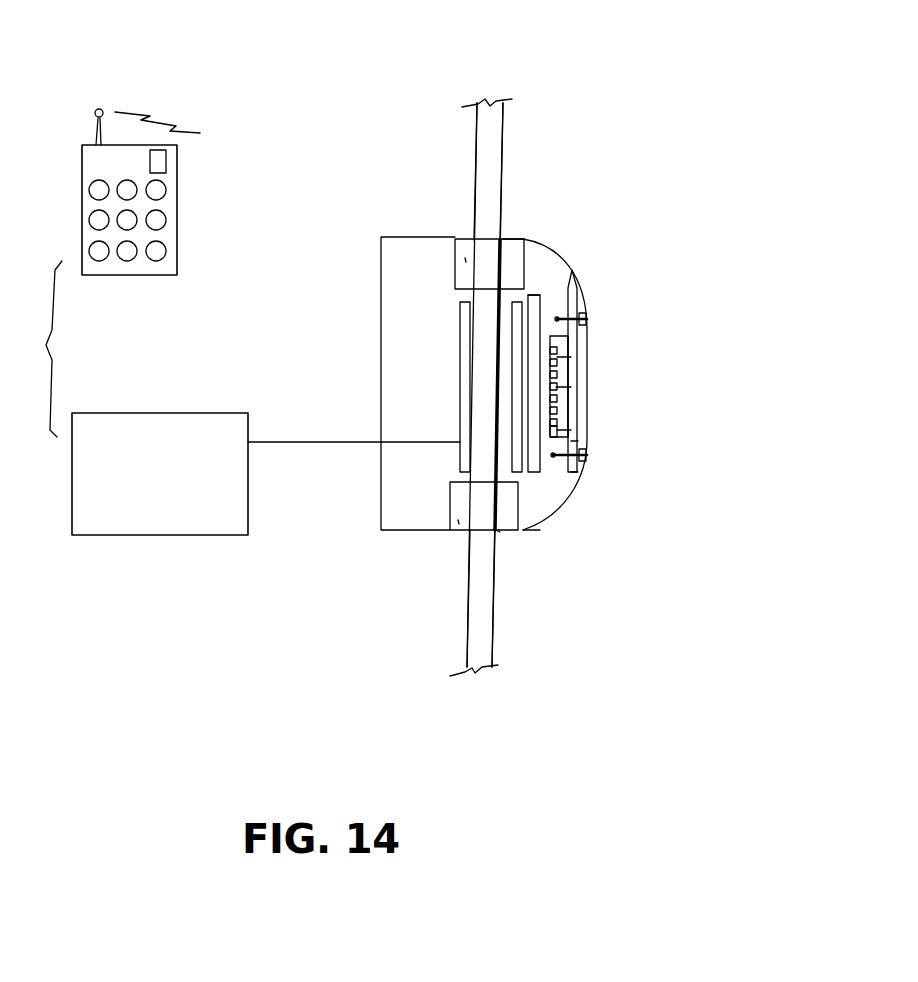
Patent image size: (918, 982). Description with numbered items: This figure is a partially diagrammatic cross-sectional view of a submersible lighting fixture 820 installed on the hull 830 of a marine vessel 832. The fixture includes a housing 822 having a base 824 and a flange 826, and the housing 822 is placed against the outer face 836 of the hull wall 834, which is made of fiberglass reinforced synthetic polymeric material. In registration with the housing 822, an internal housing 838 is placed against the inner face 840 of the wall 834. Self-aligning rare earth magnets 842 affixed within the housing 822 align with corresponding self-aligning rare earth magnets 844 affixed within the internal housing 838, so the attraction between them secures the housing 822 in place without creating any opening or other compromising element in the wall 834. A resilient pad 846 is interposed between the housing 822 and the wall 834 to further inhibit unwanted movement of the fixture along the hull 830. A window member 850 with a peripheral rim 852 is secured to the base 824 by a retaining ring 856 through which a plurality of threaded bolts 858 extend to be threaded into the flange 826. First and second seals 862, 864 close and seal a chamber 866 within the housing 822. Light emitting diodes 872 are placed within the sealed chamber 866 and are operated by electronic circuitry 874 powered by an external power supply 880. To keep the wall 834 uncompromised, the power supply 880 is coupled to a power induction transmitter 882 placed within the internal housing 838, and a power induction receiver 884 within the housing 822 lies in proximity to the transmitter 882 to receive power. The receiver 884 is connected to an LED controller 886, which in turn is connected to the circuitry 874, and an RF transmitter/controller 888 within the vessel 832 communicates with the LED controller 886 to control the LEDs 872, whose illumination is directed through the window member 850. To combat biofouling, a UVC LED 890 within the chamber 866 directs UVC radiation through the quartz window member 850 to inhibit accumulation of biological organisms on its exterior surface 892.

The submersible lighting fixture 820 is at (560, 522).
The housing 822 is at (530, 523).
The base 824 is at (515, 239).
The flange 826 is at (518, 313).
The hull 830 is at (503, 108).
The marine vessel 832 is at (508, 134).
The wall 834 is at (477, 131).
The outer face 836 is at (493, 627).
The internal housing 838 is at (383, 530).
The inner face 840 is at (467, 624).
The self-aligning rare earth magnets 842 is at (512, 260).
The self-aligning rare earth magnets 844 is at (466, 258).
The resilient pad 846 is at (497, 532).
The window member 850 is at (588, 347).
The peripheral rim 852 is at (540, 310).
The retaining ring 856 is at (575, 473).
The threaded bolts 858 is at (585, 456).
The first seal 862 is at (577, 443).
The second seal 864 is at (560, 430).
The chamber 866 is at (560, 418).
The light emitting diodes 872 is at (556, 375).
The electronic circuitry 874 is at (563, 343).
The external power supply 880 is at (171, 535).
The power induction transmitter 882 is at (460, 358).
The power induction receiver 884 is at (575, 271).
The LED controller 886 is at (585, 283).
The RF transmitter/controller 888 is at (160, 276).
The UVC LED 890 is at (556, 387).
The exterior surface 892 is at (580, 355).